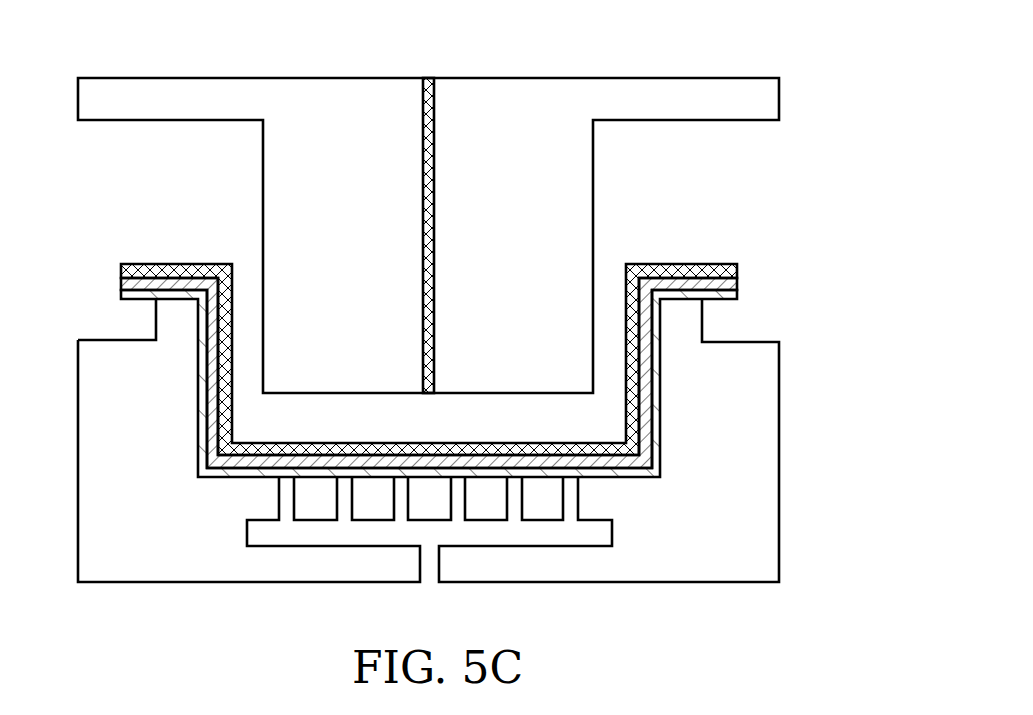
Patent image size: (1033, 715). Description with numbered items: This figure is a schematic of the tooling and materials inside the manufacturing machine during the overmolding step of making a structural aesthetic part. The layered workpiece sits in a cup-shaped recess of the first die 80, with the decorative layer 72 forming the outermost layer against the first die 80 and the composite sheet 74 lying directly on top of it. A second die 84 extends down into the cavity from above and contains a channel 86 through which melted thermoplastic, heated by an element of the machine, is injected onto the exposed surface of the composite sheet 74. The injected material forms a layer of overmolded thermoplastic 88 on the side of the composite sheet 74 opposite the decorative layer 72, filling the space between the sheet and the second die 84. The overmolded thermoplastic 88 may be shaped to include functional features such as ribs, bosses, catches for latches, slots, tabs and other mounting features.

The decorative layer 72 is at (748, 301).
The composite sheet 74 is at (749, 284).
The first die 80 is at (766, 402).
The second die 84 is at (745, 82).
The channel 86 is at (428, 66).
The overmolded thermoplastic 88 is at (697, 253).